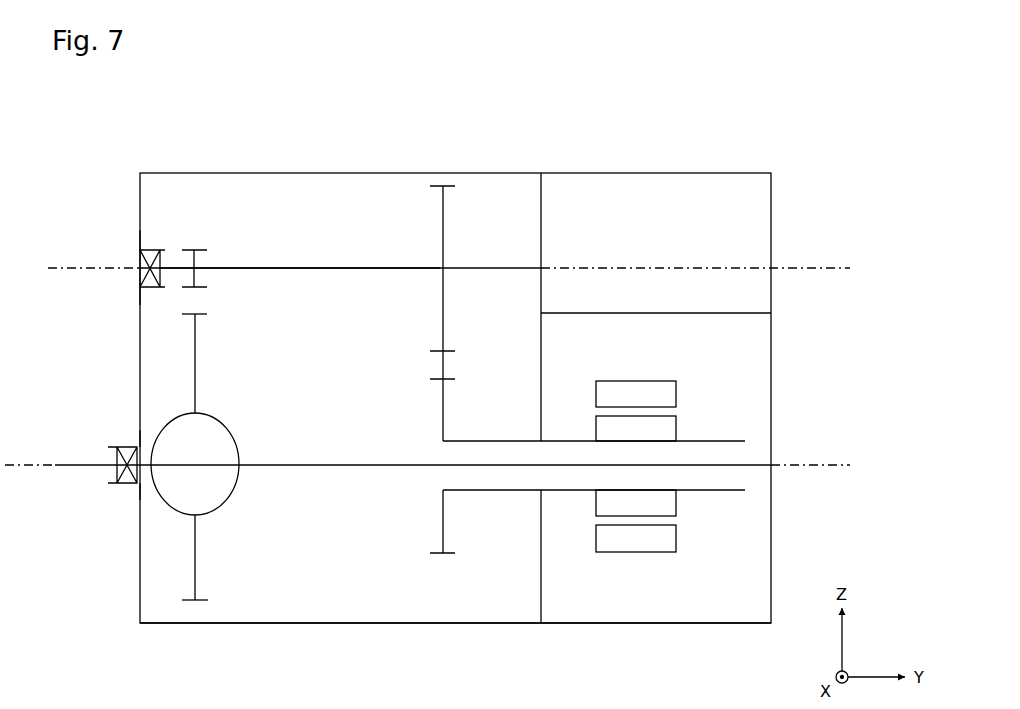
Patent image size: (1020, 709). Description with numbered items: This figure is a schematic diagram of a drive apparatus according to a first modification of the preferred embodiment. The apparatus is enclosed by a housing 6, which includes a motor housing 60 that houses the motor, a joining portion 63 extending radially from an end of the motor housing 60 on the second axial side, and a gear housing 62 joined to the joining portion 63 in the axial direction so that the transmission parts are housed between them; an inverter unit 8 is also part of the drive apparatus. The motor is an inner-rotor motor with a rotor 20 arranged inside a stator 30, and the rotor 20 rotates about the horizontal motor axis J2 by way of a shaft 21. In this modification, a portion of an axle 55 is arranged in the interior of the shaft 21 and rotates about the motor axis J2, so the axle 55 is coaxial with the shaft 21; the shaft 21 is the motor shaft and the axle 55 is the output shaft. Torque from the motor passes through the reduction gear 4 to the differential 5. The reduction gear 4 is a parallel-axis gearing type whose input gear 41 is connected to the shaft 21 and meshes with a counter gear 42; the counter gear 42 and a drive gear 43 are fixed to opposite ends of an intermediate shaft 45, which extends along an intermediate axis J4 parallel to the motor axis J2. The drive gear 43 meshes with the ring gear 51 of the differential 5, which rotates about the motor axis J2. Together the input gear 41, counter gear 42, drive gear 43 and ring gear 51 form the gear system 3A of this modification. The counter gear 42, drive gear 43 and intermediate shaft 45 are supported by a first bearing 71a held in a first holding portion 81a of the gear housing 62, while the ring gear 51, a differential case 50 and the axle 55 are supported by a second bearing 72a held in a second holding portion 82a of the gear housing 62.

The housing 6 is at (525, 172).
The inverter unit 8 is at (656, 173).
The reduction gear 4 is at (390, 262).
The drive gear 43 is at (207, 250).
The intermediate shaft 45 is at (317, 270).
The counter gear 42 is at (430, 351).
The input gear 41 is at (430, 379).
The shaft 21 is at (483, 441).
The ring gear 51 is at (207, 314).
The differential case 50 is at (234, 487).
The differential 5 is at (236, 522).
The axle 55 is at (317, 470).
The gear system 3A is at (243, 588).
The gear housing 62 is at (335, 625).
The joining portion 63 is at (537, 600).
The motor housing 60 is at (671, 625).
The stator 30 is at (676, 394).
The rotor 20 is at (676, 427).
The first bearing 71a is at (140, 267).
The second bearing 72a is at (117, 462).
The first holding portion 81a is at (150, 250).
The second holding portion 82a is at (120, 447).
The intermediate axis J4 is at (820, 272).
The motor axis J2 is at (826, 470).